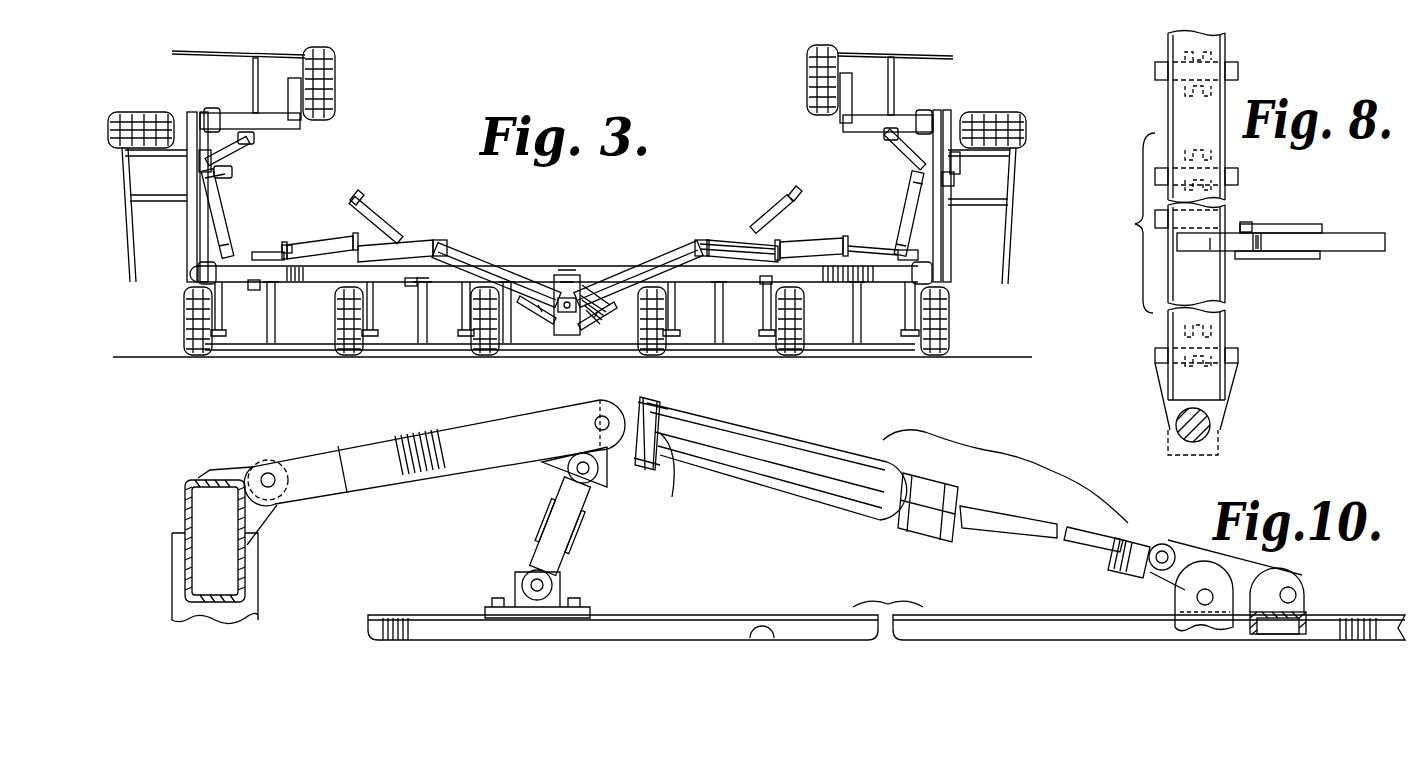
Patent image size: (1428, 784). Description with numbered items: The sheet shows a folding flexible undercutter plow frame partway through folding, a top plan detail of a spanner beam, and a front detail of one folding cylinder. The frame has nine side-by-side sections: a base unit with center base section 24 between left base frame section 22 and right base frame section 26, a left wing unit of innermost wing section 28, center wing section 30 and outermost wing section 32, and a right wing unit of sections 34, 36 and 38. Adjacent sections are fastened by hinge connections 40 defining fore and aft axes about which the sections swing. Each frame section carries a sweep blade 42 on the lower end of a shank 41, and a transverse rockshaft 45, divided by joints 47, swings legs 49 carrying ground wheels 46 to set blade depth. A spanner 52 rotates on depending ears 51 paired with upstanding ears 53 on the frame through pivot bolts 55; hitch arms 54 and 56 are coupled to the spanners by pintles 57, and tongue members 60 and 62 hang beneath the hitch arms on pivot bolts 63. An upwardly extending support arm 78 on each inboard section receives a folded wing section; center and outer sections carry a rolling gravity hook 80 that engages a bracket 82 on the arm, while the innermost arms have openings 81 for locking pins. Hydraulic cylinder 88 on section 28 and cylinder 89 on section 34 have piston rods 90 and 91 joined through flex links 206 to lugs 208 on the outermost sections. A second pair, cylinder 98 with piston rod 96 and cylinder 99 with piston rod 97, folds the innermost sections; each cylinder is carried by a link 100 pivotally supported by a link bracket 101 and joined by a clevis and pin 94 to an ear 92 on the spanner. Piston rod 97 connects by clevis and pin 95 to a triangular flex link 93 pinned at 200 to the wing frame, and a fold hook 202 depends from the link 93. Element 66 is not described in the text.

In FIG. 3, the left base frame section 22 is at (440, 296).
In FIG. 3, the center base section 24 is at (532, 266).
In FIG. 3, the right base frame section 26 is at (700, 283).
In FIG. 10, the right base frame section 26 is at (614, 618).
In FIG. 3, the left innermost wing section 28 is at (322, 283).
In FIG. 3, the left center wing section 30 is at (187, 218).
In FIG. 3, the left outermost wing section 32 is at (286, 130).
In FIG. 3, the right innermost wing section 34 is at (848, 283).
In FIG. 10, the right innermost wing section 34 is at (964, 618).
In FIG. 3, the right center wing section 36 is at (951, 218).
In FIG. 3, the right outermost wing section 38 is at (855, 133).
In FIG. 10, the hinge connections 40 is at (766, 620).
In FIG. 3, the shank 41 is at (253, 74).
In FIG. 3, the sweep blades 42 is at (175, 52).
In FIG. 3, the rockshaft 45 is at (712, 306).
In FIG. 3, the ground wheels 46 is at (337, 56).
In FIG. 3, the joints 47 is at (462, 285).
In FIG. 3, the legs 49 is at (288, 80).
In FIG. 8, the depending ears 51 is at (1240, 62).
In FIG. 8, the spanner 52 is at (1170, 110).
In FIG. 10, the spanner 52 is at (185, 488).
In FIG. 8, the upstanding ears 53 is at (1218, 146).
In FIG. 3, the hitch arm 54 is at (466, 258).
In FIG. 8, the pivot bolts 55 is at (1210, 148).
In FIG. 3, the hitch arm 56 is at (637, 266).
In FIG. 8, the pintle 57 is at (1212, 440).
In FIG. 3, the tongue member 60 is at (558, 336).
In FIG. 3, the tongue member 62 is at (583, 320).
In FIG. 3, the pivot bolts 63 is at (541, 310).
In FIG. 3, the spring 66 is at (596, 313).
In FIG. 3, the support arm 78 is at (362, 208).
In FIG. 3, the rolling gravity hook 80 is at (248, 144).
In FIG. 3, the openings 81 is at (366, 196).
In FIG. 3, the bracket 82 is at (232, 156).
In FIG. 3, the hydraulic cylinder 88 is at (226, 218).
In FIG. 3, the hydraulic cylinder 89 is at (912, 186).
In FIG. 3, the piston rod 90 is at (226, 180).
In FIG. 3, the piston rod 91 is at (954, 179).
In FIG. 3, the ear 92 is at (442, 240).
In FIG. 8, the ear 92 is at (1206, 250).
In FIG. 10, the ear 92 is at (212, 474).
In FIG. 3, the flex link 93 is at (254, 290).
In FIG. 10, the flex link 93 is at (1140, 578).
In FIG. 8, the clevis and pin arrangement 94 is at (1250, 222).
In FIG. 10, the clevis and pin arrangement 94 is at (270, 474).
In FIG. 3, the clevis and pin arrangement 95 is at (262, 252).
In FIG. 10, the clevis and pin arrangement 95 is at (1168, 545).
In FIG. 3, the piston rod 96 is at (288, 244).
In FIG. 3, the piston rod 97 is at (876, 250).
In FIG. 10, the piston rod 97 is at (1014, 524).
In FIG. 3, the hydraulic cylinder 98 is at (349, 233).
In FIG. 3, the hydraulic cylinder 99 is at (796, 237).
In FIG. 10, the hydraulic cylinder 99 is at (790, 497).
In FIG. 3, the link 100 is at (400, 242).
In FIG. 8, the link 100 is at (1373, 234).
In FIG. 10, the link 100 is at (383, 480).
In FIG. 3, the link bracket 101 is at (409, 287).
In FIG. 10, the link bracket 101 is at (535, 550).
In FIG. 10, the pin 200 is at (1300, 592).
In FIG. 3, the fold hook 202 is at (262, 296).
In FIG. 10, the fold hook 202 is at (1170, 603).
In FIG. 3, the flex links 206 is at (199, 160).
In FIG. 3, the lugs 208 is at (216, 110).